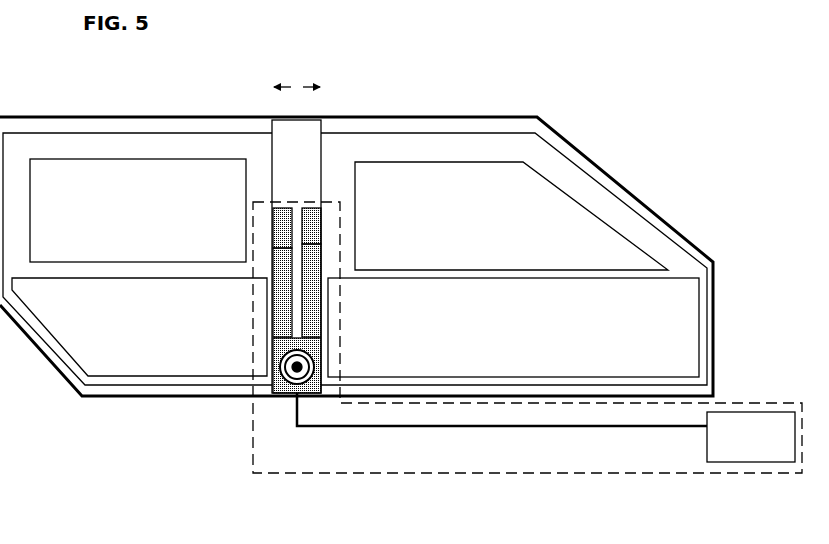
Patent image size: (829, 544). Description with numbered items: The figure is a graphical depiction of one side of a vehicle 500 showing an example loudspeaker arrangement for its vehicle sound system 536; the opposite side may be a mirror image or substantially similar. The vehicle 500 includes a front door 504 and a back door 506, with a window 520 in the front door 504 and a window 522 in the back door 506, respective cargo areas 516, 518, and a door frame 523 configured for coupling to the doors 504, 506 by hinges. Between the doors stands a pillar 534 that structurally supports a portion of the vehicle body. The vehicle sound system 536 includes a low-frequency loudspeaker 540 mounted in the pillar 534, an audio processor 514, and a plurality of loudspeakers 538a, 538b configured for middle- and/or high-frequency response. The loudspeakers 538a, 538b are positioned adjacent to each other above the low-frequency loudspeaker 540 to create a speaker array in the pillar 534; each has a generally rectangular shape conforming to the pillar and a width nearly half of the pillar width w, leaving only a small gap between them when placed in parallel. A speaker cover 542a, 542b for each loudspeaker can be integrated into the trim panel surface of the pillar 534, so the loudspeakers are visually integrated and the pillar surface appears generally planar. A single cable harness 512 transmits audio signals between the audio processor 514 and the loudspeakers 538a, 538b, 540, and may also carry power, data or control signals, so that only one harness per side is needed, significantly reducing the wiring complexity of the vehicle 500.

The vehicle 500 is at (545, 72).
The front door 504 is at (495, 128).
The back door 506 is at (150, 132).
The single cable harness 512 is at (480, 428).
The audio processor 514 is at (737, 462).
The cargo area 516 is at (680, 360).
The cargo area 518 is at (83, 340).
The window 520 is at (548, 180).
The window 522 is at (52, 157).
The door frame 523 is at (630, 193).
The pillar 534 is at (308, 120).
The vehicle sound system 536 is at (462, 473).
The loudspeaker 538a is at (308, 208).
The loudspeaker 538b is at (280, 208).
The low-frequency loudspeaker 540 is at (280, 388).
The speaker cover 542a is at (313, 242).
The speaker cover 542b is at (282, 248).